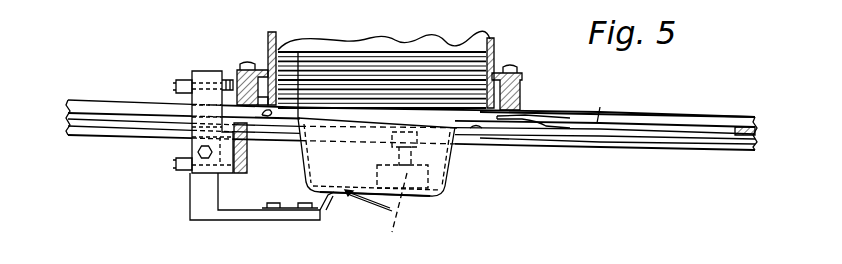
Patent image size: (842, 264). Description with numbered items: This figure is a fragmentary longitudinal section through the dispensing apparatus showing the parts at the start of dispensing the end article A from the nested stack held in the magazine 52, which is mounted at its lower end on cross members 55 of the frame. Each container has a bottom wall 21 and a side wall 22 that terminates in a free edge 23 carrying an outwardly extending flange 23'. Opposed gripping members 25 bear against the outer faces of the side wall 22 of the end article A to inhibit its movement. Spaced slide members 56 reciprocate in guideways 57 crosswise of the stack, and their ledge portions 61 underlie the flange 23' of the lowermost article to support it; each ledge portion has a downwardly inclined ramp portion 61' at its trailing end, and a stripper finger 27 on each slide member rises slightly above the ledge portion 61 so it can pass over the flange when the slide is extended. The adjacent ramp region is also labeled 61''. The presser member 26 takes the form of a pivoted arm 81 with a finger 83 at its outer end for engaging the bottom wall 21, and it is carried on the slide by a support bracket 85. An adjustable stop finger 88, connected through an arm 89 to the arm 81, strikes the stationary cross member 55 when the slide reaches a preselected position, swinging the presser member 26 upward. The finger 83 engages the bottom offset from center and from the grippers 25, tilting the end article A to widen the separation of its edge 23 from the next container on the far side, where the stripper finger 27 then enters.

The bottom wall 21 is at (417, 200).
The side wall 22 is at (447, 176).
The free edge 23 is at (384, 66).
The flange 23' is at (304, 59).
The gripping members 25 is at (390, 210).
The presser member 26 is at (328, 201).
The stripper finger 27 is at (529, 111).
The magazine 52 is at (493, 40).
The cross members 55 is at (251, 62).
The slide members 56 is at (747, 115).
The guideways 57 is at (645, 113).
The ledge portions 61 is at (271, 139).
The ramp portion 61' is at (505, 151).
The spring tab 61'' is at (610, 107).
The arm 81 is at (226, 215).
The finger 83 is at (380, 205).
The support bracket 85 is at (238, 173).
The stop finger 88 is at (229, 78).
The arm 89 is at (200, 101).
The end article A is at (446, 192).